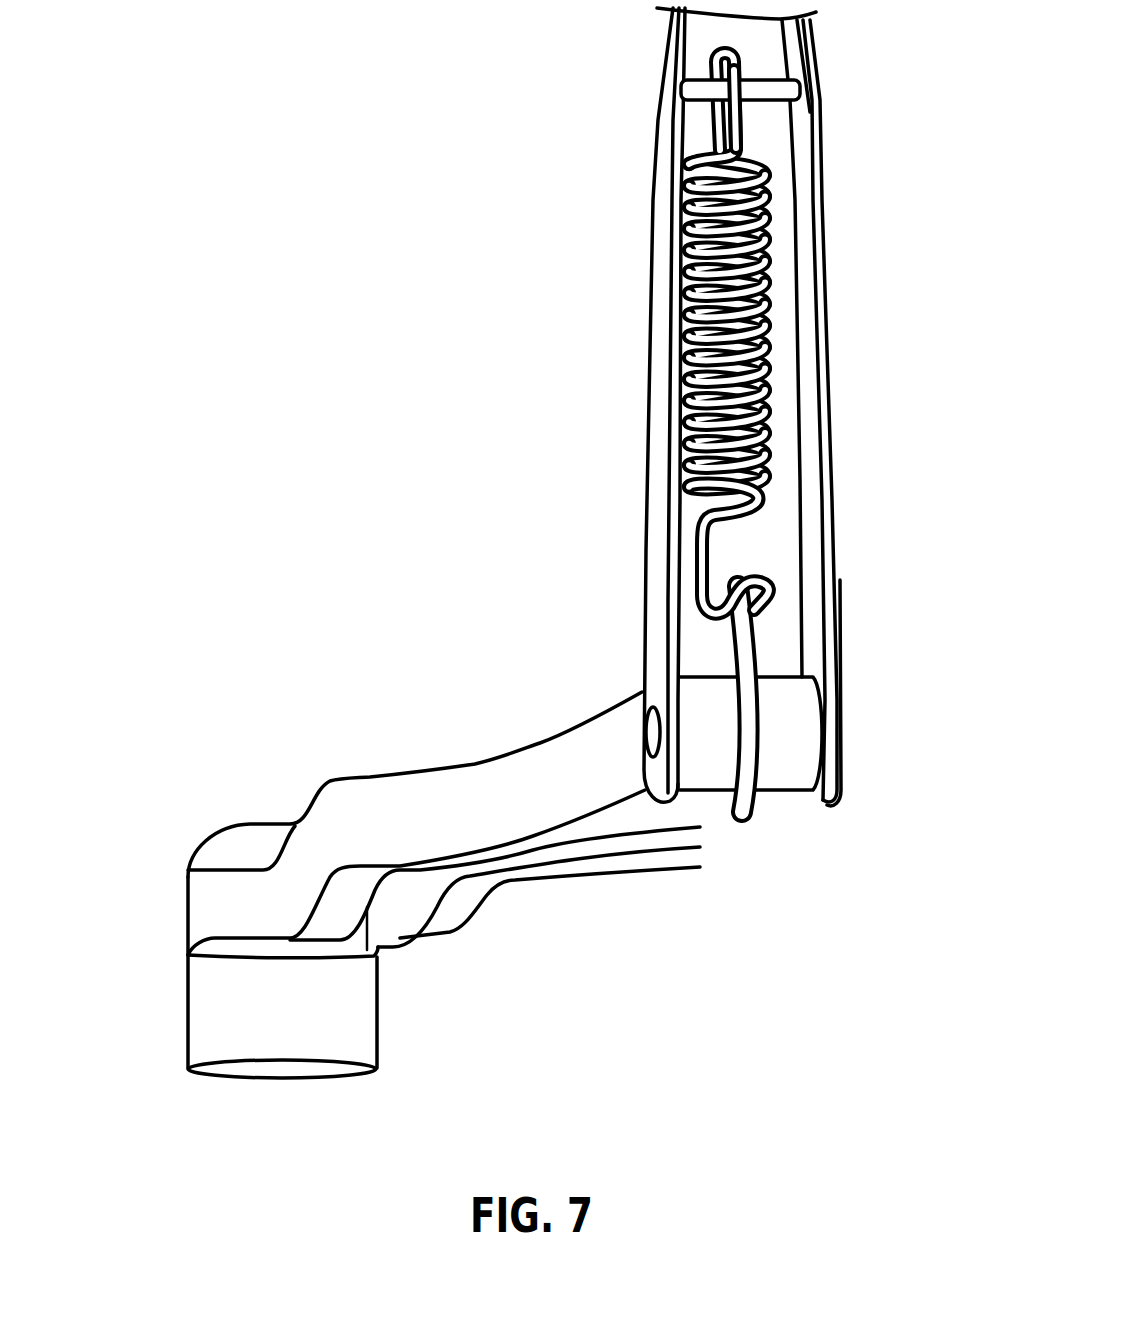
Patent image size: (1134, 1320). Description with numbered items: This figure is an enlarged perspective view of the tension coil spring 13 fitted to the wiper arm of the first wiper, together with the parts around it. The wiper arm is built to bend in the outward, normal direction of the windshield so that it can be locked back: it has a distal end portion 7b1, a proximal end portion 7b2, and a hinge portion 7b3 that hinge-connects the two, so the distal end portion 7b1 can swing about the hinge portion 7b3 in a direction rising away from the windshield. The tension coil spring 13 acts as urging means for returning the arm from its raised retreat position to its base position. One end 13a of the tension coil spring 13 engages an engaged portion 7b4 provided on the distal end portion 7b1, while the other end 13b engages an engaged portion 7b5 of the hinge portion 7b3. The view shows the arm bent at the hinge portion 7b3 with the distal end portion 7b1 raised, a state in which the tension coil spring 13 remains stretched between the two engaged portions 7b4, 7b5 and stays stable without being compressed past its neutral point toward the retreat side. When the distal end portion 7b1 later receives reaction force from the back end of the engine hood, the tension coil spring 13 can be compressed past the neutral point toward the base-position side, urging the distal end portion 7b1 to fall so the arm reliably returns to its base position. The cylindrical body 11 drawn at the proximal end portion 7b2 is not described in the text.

The distal end portion 7b1 is at (830, 586).
The proximal end portion 7b2 is at (485, 783).
The hinge portion 7b3 is at (648, 733).
The engaged portion 7b4 is at (764, 90).
The engaged portion 7b5 is at (694, 805).
The cylindrical boss 11 is at (203, 1022).
The tension coil spring 13 is at (707, 381).
The one end of the tension coil spring 13a is at (733, 137).
The other end of the tension coil spring 13b is at (745, 825).